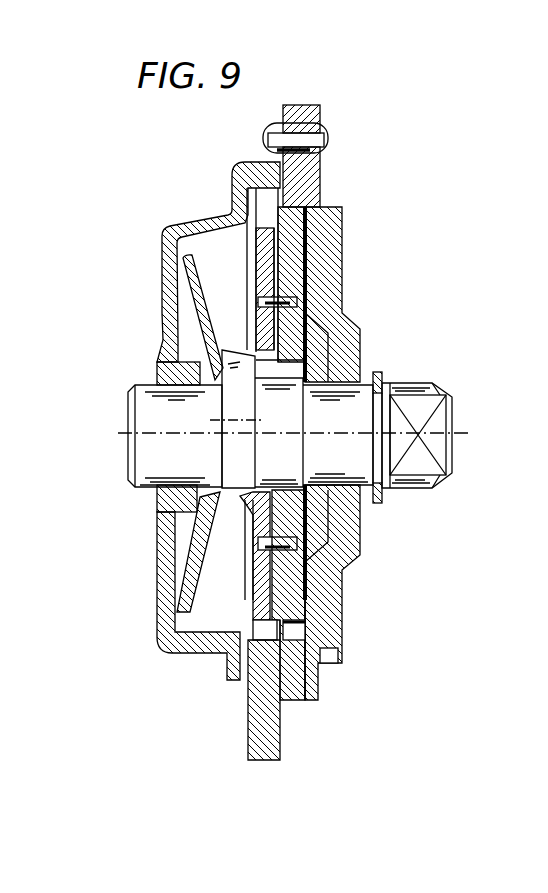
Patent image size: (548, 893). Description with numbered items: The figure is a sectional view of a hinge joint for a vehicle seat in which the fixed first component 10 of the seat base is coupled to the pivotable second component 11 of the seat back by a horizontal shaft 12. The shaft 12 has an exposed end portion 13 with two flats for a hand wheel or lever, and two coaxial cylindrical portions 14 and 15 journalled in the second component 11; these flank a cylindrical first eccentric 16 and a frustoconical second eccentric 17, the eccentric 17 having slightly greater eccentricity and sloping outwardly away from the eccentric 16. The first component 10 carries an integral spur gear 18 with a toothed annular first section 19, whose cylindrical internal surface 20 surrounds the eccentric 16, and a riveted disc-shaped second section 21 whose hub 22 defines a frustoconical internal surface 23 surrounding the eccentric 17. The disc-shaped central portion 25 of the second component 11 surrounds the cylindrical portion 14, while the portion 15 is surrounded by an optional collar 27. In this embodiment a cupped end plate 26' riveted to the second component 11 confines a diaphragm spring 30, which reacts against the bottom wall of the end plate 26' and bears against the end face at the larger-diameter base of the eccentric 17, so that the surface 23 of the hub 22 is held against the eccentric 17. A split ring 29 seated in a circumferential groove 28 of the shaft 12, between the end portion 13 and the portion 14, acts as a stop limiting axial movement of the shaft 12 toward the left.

The first component 10 is at (258, 748).
The second component 11 is at (314, 120).
The shaft 12 is at (455, 425).
The exposed end portion 13 is at (428, 382).
The cylindrical portion 14 is at (340, 414).
The cylindrical portion 15 is at (178, 464).
The first eccentric 16 is at (288, 464).
The second eccentric 17 is at (247, 404).
The spur gear 18 is at (296, 629).
The toothed annular first section 19 is at (292, 590).
The cylindrical internal surface 20 is at (362, 548).
The disc-shaped annular second section 21 is at (258, 258).
The hub 22 is at (170, 340).
The frustoconical internal surface 23 is at (205, 522).
The central portion 25 is at (328, 266).
The cupped end plate 26' is at (164, 262).
The collar 27 is at (160, 378).
The circumferential groove 28 is at (383, 498).
The split ring 29 is at (382, 378).
The diaphragm spring 30 is at (163, 292).